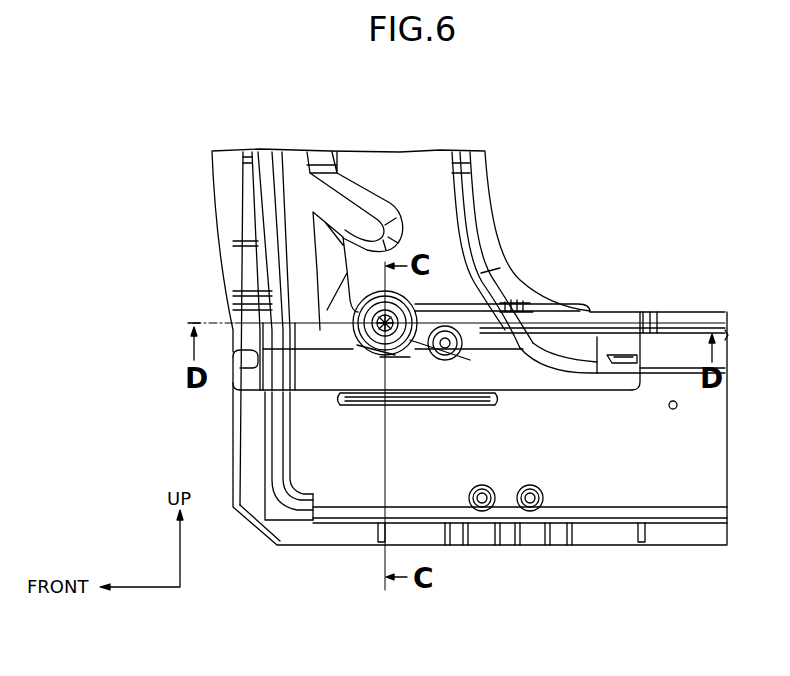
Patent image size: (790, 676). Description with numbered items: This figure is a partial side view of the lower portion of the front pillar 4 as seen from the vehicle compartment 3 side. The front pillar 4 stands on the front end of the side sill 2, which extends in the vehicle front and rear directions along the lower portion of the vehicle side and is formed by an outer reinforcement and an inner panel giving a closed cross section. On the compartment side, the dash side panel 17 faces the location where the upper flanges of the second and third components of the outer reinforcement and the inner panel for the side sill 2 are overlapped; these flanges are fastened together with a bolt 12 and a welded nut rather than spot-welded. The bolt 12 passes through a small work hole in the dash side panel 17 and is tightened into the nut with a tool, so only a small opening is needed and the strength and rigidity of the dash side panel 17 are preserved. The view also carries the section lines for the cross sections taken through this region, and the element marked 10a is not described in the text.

The side sill 2 is at (697, 548).
The vehicle compartment 3 is at (657, 245).
The front pillar 4 is at (492, 197).
The bolt 10a is at (398, 316).
The bolt 12 is at (358, 346).
The dash side panel 17 is at (406, 160).